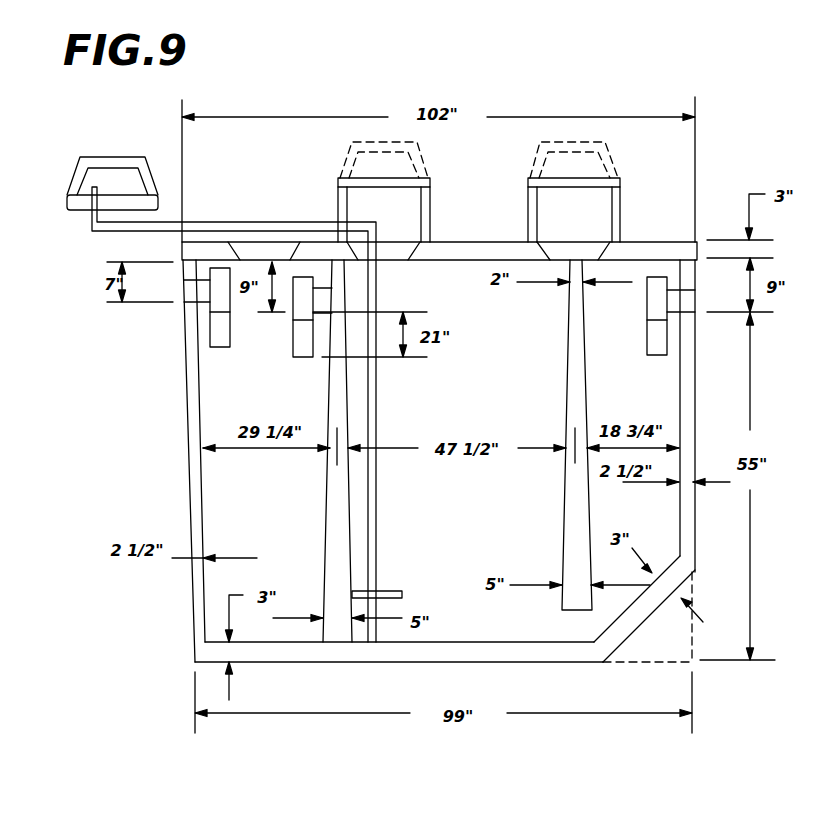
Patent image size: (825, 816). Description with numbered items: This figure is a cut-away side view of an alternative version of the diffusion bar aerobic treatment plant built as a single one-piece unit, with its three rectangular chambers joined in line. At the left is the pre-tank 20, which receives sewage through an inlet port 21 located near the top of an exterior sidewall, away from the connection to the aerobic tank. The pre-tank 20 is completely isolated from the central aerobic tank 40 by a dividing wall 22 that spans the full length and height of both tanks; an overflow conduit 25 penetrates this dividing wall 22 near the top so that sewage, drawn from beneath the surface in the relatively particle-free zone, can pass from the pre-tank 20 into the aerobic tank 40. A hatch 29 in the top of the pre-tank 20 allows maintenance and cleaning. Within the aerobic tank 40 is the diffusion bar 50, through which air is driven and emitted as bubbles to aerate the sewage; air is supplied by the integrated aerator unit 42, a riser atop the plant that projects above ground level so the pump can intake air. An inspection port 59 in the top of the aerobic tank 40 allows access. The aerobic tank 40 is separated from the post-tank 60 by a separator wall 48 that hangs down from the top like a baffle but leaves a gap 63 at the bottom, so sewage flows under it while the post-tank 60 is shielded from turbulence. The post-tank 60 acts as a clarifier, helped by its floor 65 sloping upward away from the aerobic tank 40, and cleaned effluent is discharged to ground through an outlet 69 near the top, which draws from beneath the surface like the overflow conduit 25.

The pre-tank 20 is at (247, 533).
The inlet port 21 is at (183, 290).
The dividing wall 22 is at (338, 630).
The overflow conduit 25 is at (300, 357).
The hatch 29 is at (270, 250).
The aerobic tank 40 is at (462, 547).
The aerator unit 42 is at (123, 150).
The separator wall 48 is at (573, 321).
The diffusion bar 50 is at (377, 628).
The inspection port 59 is at (398, 253).
The post-tank 60 is at (648, 519).
The gap 63 is at (573, 630).
The floor of the post-tank 65 is at (637, 613).
The outlet 69 is at (690, 300).